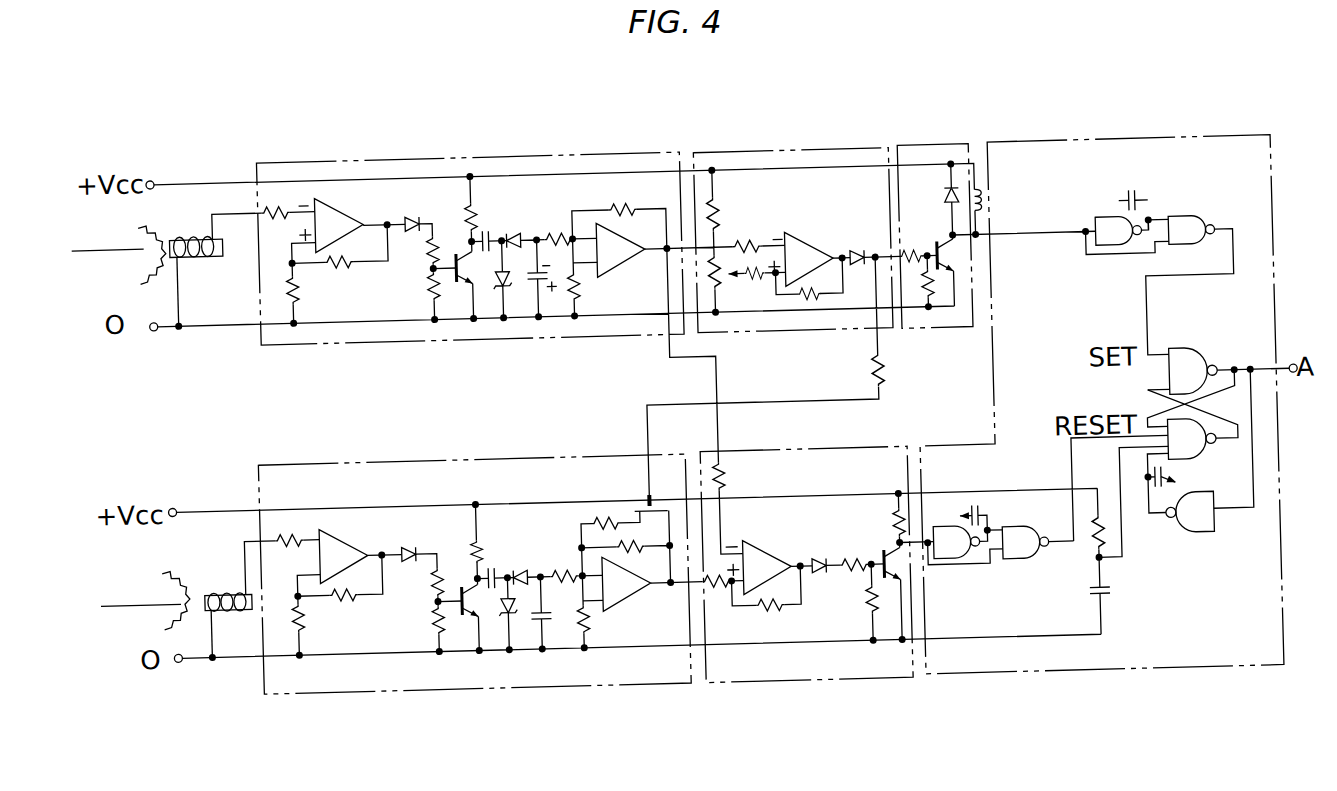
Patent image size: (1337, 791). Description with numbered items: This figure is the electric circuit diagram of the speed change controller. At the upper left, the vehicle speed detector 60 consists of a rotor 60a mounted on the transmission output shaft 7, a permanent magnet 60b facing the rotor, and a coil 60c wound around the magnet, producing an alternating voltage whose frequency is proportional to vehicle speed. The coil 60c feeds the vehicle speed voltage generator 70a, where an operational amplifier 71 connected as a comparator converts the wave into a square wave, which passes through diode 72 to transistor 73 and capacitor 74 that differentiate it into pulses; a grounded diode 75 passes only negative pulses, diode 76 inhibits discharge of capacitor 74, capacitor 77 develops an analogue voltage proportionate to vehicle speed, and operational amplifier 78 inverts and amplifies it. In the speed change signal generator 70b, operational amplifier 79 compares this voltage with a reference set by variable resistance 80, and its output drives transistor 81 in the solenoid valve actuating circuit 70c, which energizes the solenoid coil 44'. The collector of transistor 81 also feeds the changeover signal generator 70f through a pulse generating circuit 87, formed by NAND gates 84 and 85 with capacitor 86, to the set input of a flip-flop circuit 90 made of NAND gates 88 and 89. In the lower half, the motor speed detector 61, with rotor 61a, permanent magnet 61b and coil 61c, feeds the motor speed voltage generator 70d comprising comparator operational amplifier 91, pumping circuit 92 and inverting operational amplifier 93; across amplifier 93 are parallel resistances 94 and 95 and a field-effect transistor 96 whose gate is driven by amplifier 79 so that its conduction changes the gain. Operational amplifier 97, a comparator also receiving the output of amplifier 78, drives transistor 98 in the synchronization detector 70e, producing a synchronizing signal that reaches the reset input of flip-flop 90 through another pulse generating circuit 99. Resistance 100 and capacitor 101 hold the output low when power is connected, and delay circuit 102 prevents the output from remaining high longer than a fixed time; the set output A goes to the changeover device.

The transmission output shaft 7 is at (126, 411).
The vehicle speed detector 60 is at (181, 236).
The rotor 60a is at (142, 272).
The permanent magnet 60b is at (216, 258).
The coil 60c is at (193, 258).
The motor speed detector 61 is at (186, 650).
The rotor 61a is at (166, 580).
The permanent magnet 61b is at (206, 596).
The coil 61c is at (215, 612).
The vehicle speed voltage generator 70a is at (535, 166).
The speed change signal generator 70b is at (783, 167).
The solenoid valve actuating circuit 70c is at (908, 165).
The motor speed voltage generator 70d is at (427, 468).
The synchronization detector 70e is at (775, 466).
The changeover signal generator 70f is at (1040, 694).
The operational amplifier 71 is at (328, 210).
The diode 72 is at (402, 215).
The transistor 73 is at (460, 300).
The capacitor 74 is at (485, 237).
The diode 75 is at (500, 308).
The diode 76 is at (516, 244).
The capacitor 77 is at (536, 304).
The operational amplifier 78 is at (630, 226).
The operational amplifier 79 is at (796, 261).
The variable resistance 80 is at (728, 292).
The transistor 81 is at (936, 267).
The relay coil 44' is at (991, 152).
The NAND gate 84 is at (1099, 242).
The NAND gate 85 is at (1193, 244).
The capacitor 86 is at (1127, 216).
The pulse generating circuit 87 is at (1150, 243).
The NAND gate 88 is at (1193, 378).
The NAND gate 89 is at (1200, 477).
The flip-flop circuit 90 is at (1149, 434).
The operational amplifier 91 is at (341, 542).
The pumping circuit 92 is at (472, 570).
The operational amplifier 93 is at (611, 597).
The resistance 94 is at (582, 561).
The resistance 95 is at (598, 533).
The field-effect transistor 96 is at (656, 515).
The operational amplifier 97 is at (755, 564).
The transistor 98 is at (872, 571).
The pulse generating circuit 99 is at (967, 590).
The resistance 100 is at (1084, 570).
The capacitor 101 is at (1088, 633).
The delay circuit 102 is at (1184, 558).